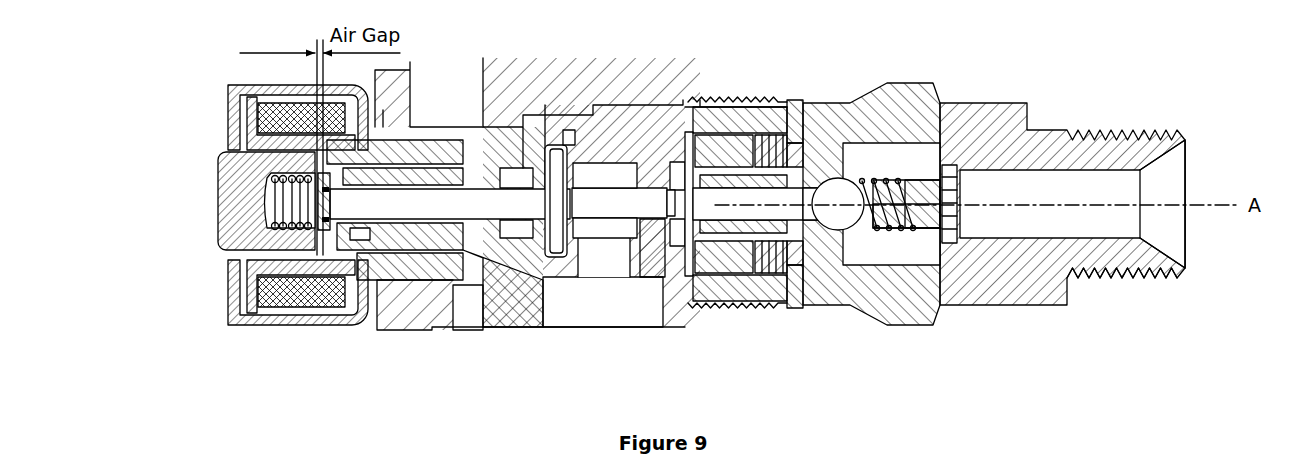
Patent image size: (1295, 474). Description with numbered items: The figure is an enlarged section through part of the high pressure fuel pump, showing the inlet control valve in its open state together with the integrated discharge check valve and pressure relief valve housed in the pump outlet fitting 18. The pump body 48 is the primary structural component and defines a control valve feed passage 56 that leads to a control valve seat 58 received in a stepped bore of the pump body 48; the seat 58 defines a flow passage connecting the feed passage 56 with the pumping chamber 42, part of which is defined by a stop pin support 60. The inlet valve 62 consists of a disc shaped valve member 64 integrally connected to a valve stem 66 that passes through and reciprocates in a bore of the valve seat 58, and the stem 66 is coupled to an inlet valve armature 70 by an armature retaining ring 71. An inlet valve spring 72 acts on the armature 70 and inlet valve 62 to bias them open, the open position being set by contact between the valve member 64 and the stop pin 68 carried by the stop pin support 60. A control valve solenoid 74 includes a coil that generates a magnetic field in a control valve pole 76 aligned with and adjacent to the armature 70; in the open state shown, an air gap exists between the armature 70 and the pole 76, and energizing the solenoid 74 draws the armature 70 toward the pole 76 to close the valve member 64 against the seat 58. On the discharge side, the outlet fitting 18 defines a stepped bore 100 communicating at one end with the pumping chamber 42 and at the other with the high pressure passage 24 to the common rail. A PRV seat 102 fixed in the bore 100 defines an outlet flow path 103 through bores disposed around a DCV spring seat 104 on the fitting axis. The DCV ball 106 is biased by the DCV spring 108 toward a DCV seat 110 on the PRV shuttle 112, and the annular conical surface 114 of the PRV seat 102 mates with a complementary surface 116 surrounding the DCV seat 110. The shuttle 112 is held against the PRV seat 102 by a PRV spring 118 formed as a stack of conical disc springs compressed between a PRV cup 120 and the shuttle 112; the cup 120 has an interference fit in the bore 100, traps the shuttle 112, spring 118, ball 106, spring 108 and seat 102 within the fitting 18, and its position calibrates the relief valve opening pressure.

The pump outlet fitting 18 is at (1143, 253).
The high pressure passage 24 is at (1178, 190).
The pumping chamber 42 is at (612, 140).
The pump body 48 is at (777, 250).
The control valve feed passage 56 is at (437, 112).
The control valve seat 58 is at (503, 207).
The stop pin support 60 is at (715, 258).
The inlet valve 62 is at (593, 205).
The valve member 64 is at (608, 177).
The valve stem 66 is at (439, 207).
The stop pin 68 is at (654, 248).
The inlet valve armature 70 is at (354, 240).
The armature retaining ring 71 is at (333, 213).
The inlet valve spring 72 is at (281, 223).
The control valve solenoid 74 is at (262, 83).
The control valve pole 76 is at (220, 212).
The stepped bore 100 is at (817, 100).
The PRV seat 102 is at (905, 162).
The outlet flow path 103 is at (933, 170).
The DCV spring seat 104 is at (950, 235).
The DCV ball 106 is at (893, 225).
The DCV spring 108 is at (922, 213).
The DCV seat 110 is at (820, 180).
The PRV shuttle 112 is at (842, 215).
The annular conical surface 114 is at (900, 178).
The complementary surface 116 is at (838, 150).
The PRV spring 118 is at (813, 243).
The PRV cup 120 is at (753, 317).